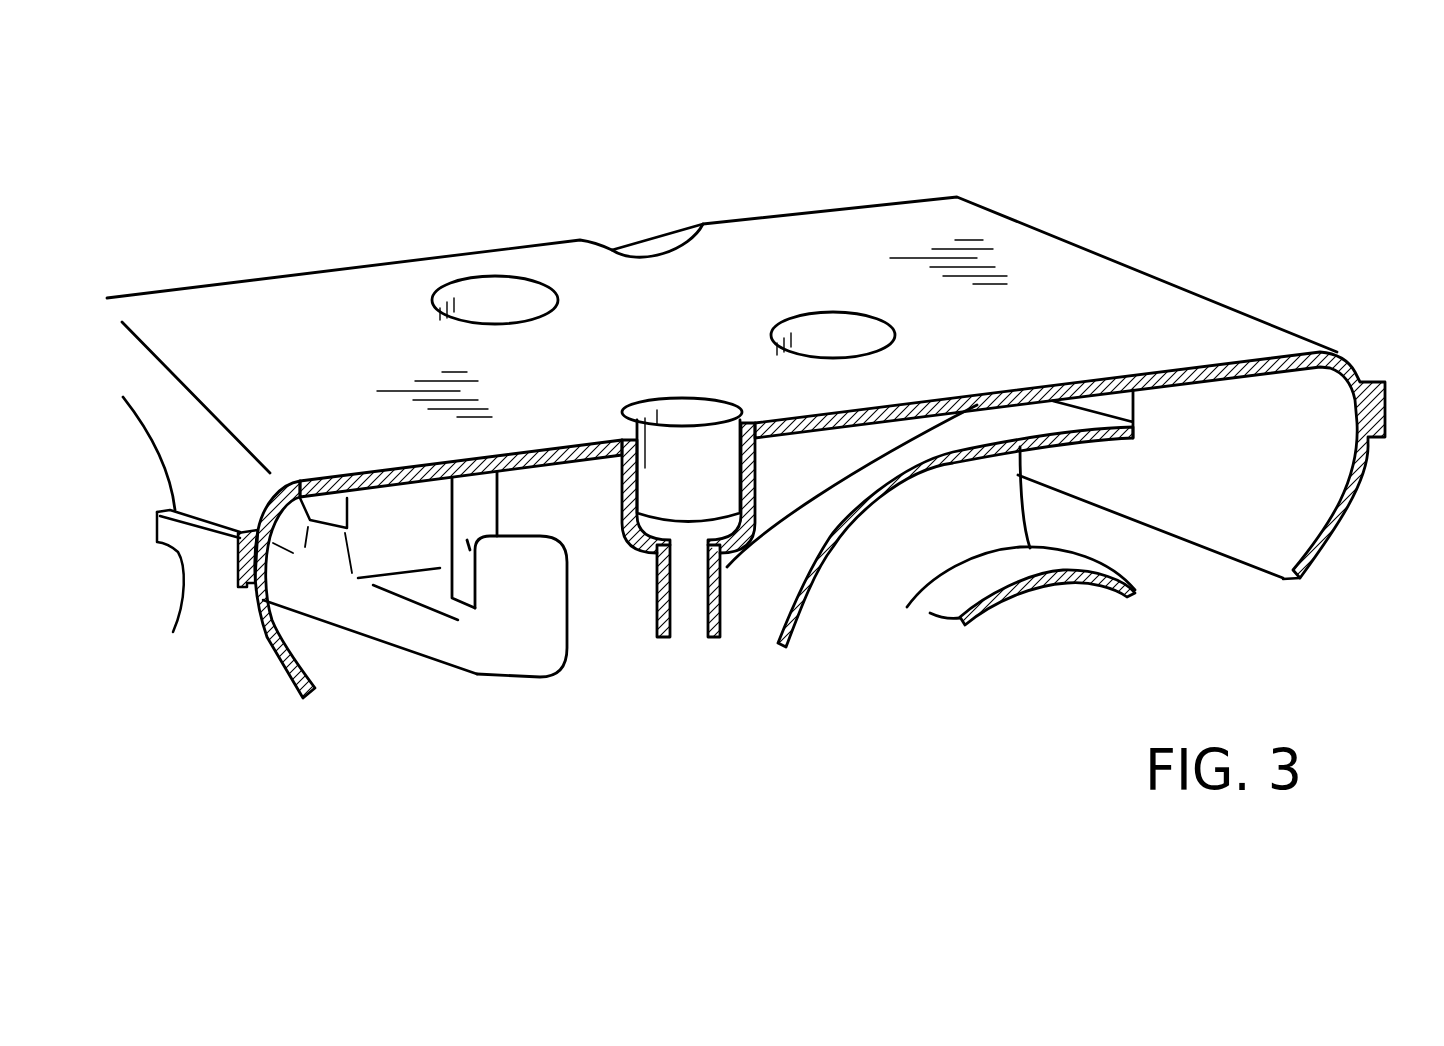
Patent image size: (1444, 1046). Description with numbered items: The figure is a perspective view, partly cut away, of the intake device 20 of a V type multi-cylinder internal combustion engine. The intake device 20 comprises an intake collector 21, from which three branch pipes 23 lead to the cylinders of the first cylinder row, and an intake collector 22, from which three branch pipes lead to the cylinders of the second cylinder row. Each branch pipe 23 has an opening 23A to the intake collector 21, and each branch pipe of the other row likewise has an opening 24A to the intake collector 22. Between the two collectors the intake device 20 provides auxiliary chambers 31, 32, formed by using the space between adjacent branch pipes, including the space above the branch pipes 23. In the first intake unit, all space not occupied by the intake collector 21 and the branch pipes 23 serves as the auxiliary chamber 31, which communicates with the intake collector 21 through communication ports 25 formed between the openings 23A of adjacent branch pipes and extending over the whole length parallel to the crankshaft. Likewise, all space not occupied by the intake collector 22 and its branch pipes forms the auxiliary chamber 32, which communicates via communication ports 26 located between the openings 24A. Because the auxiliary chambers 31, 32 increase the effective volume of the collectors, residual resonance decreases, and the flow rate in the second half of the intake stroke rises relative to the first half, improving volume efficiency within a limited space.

The intake device 20 is at (769, 213).
The intake collector 21 is at (1310, 522).
The intake collector 22 is at (288, 628).
The branch pipe 23 is at (1028, 558).
The opening 23A is at (1113, 478).
The opening 24A is at (398, 537).
The communication port 25 is at (1133, 410).
The communication port 26 is at (468, 538).
The auxiliary chamber 31 is at (778, 557).
The auxiliary chamber 32 is at (603, 585).